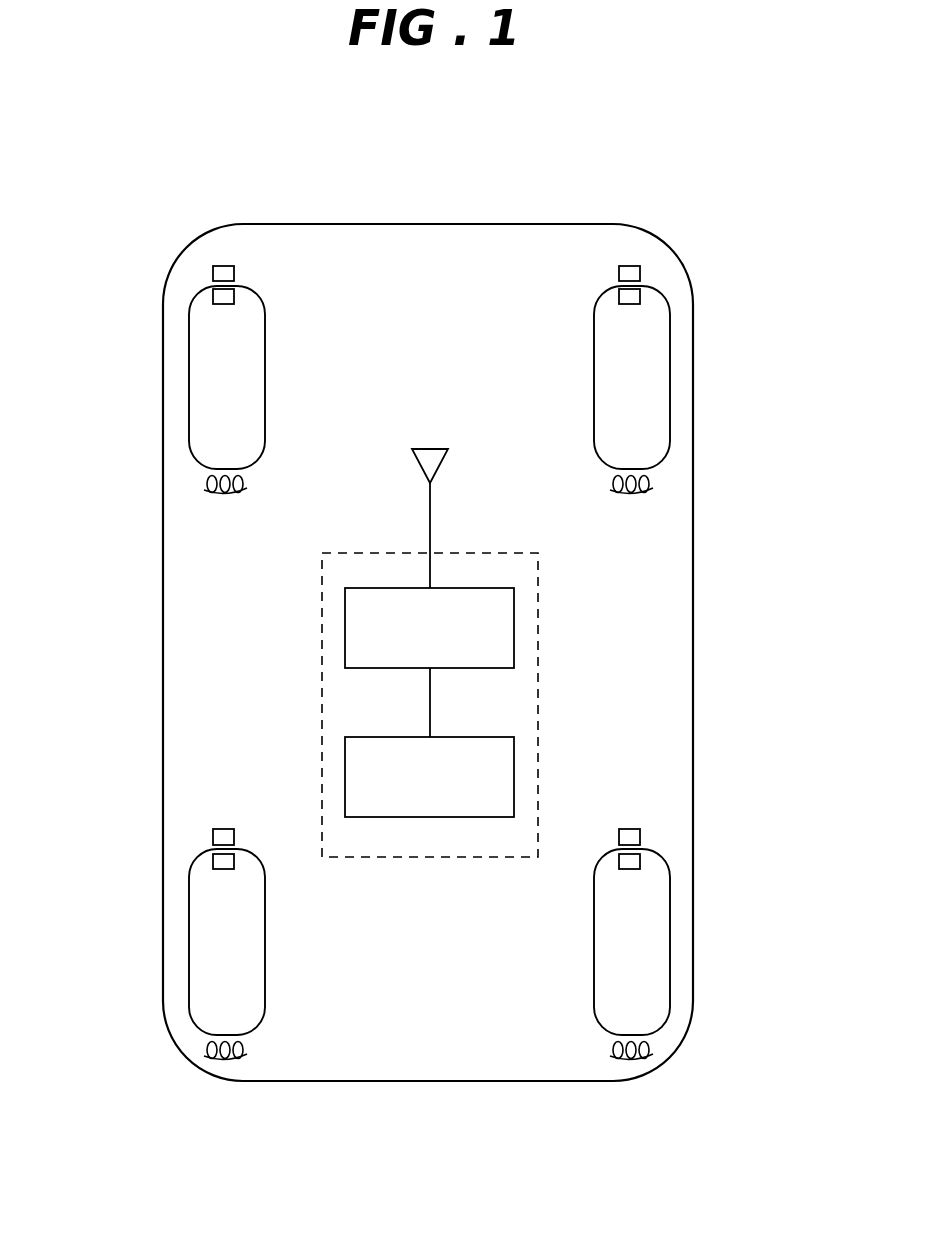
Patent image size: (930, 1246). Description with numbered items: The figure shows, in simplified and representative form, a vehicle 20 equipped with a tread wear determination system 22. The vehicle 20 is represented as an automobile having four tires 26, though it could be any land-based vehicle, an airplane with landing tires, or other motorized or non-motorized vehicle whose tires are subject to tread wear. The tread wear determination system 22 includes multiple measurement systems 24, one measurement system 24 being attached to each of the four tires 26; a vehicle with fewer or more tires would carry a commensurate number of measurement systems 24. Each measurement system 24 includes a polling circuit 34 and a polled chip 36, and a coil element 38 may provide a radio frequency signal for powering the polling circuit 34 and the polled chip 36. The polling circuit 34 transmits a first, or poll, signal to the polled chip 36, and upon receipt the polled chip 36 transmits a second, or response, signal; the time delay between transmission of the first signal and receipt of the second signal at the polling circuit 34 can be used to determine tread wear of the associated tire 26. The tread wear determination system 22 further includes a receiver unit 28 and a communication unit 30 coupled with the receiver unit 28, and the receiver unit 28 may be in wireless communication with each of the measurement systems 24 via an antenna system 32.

The vehicle 20 is at (418, 235).
The tread wear determination system 22 is at (258, 182).
The measurement system 24 is at (218, 253).
The tire 26 is at (200, 377).
The receiver unit 28 is at (507, 602).
The communication unit 30 is at (498, 805).
The antenna system 32 is at (435, 460).
The polling circuit 34 is at (213, 297).
The polled chip 36 is at (213, 270).
The coil element 38 is at (208, 477).